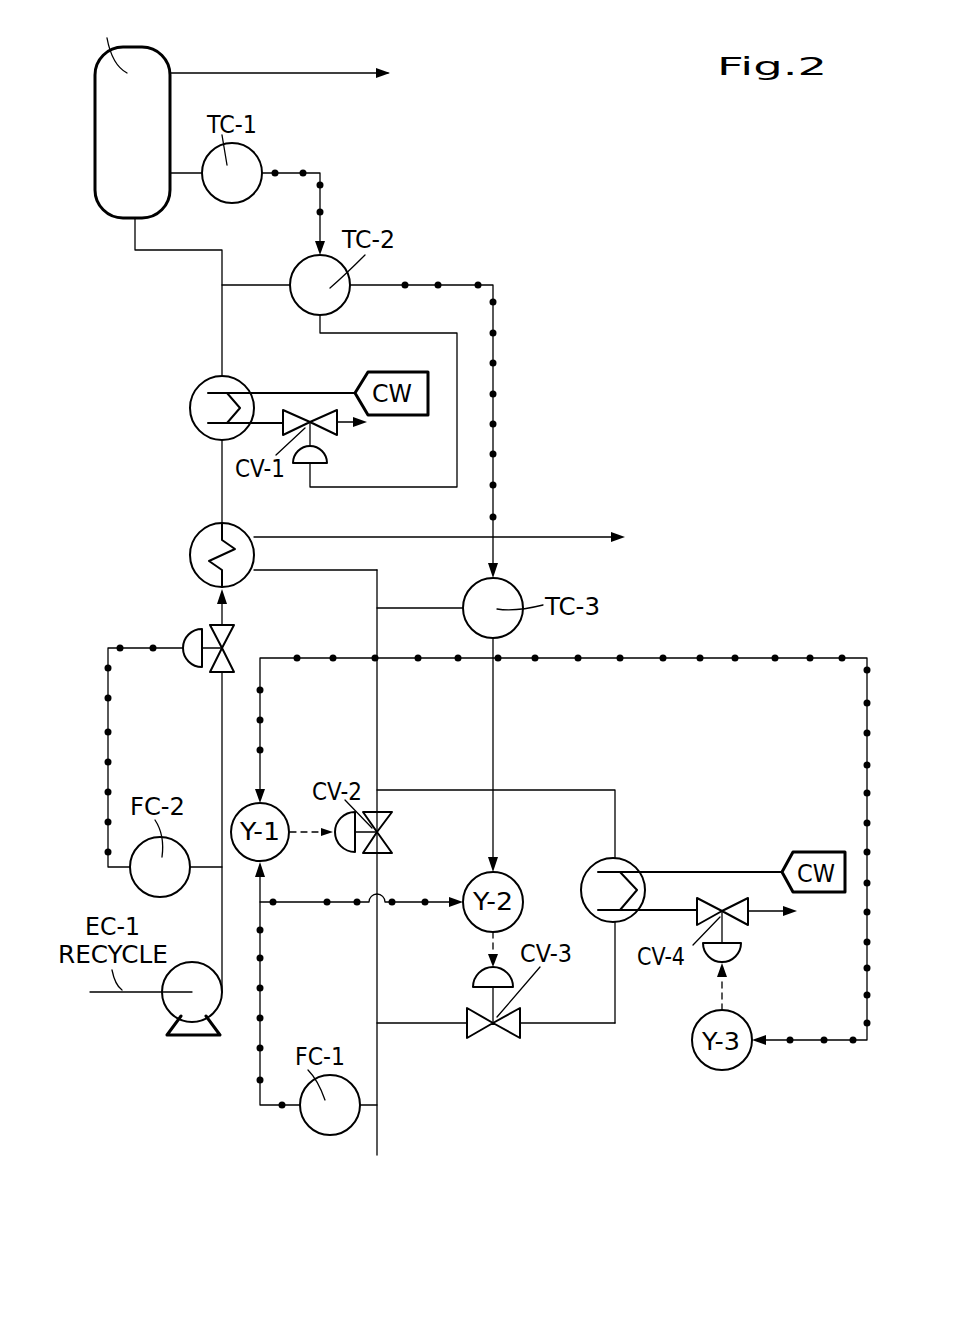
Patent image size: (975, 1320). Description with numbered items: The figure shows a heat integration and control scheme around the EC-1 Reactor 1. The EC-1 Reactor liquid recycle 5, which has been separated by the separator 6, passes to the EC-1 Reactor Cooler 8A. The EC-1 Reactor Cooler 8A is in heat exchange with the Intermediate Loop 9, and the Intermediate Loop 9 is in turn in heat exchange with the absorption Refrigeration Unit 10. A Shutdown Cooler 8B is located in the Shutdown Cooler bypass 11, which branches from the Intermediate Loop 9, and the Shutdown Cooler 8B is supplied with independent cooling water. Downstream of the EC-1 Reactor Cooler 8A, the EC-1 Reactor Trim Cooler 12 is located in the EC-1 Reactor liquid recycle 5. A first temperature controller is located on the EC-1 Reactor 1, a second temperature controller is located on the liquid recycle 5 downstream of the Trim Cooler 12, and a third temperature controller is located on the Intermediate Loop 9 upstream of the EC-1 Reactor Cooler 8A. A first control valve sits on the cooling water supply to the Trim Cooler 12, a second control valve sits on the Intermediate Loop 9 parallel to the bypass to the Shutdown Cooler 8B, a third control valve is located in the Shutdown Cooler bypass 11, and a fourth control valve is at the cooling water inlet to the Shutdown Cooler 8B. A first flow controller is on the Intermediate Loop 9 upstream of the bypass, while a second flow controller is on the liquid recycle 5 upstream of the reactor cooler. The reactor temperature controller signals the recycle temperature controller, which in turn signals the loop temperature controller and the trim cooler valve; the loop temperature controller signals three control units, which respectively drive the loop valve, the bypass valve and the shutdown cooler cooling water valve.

The EC-1 Reactor 1 is at (140, 138).
The EC-1 Reactor liquid recycle 5 is at (293, 75).
The separator 6 is at (515, 99).
The EC-1 Reactor Cooler 8A is at (197, 555).
The Shutdown Cooler 8B is at (681, 902).
The Intermediate Loop 9 is at (323, 575).
The absorption Refrigeration Unit 10 is at (518, 839).
The Shutdown Cooler bypass 11 is at (557, 792).
The EC-1 Reactor Trim Cooler 12 is at (197, 402).